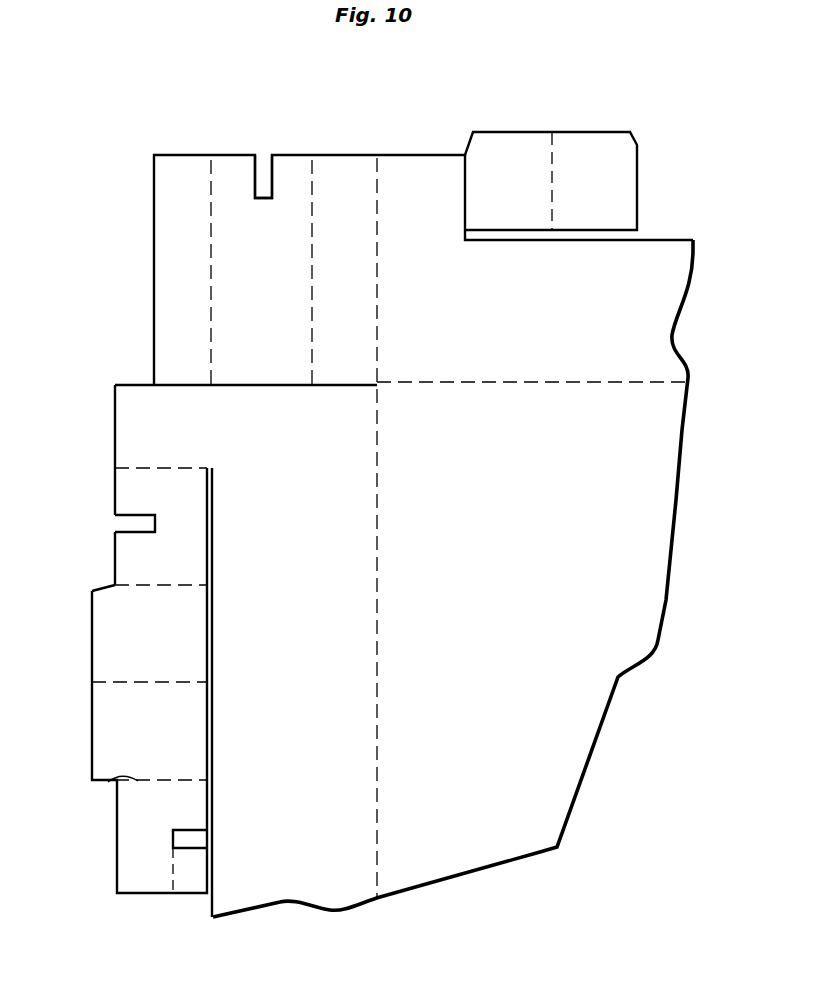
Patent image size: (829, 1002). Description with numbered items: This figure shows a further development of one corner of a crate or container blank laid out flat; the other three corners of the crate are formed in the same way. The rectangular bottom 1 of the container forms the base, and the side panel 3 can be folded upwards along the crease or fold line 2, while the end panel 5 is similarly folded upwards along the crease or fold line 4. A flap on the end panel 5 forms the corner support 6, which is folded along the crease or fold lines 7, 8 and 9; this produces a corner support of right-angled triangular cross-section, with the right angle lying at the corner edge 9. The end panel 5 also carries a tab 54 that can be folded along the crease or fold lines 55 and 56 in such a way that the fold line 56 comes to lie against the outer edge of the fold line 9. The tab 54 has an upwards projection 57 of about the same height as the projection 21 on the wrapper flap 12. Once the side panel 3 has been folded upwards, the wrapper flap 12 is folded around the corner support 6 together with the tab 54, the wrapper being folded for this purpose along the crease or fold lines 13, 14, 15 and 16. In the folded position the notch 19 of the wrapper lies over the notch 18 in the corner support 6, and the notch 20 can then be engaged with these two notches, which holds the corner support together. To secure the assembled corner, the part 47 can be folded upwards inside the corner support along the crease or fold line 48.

The bottom 1 is at (567, 772).
The crease or fold line 2 is at (378, 878).
The side panel 3 is at (271, 872).
The crease or fold line 4 is at (637, 382).
The end panel 5 is at (605, 277).
The corner support 6 is at (296, 188).
The crease or fold line 7 is at (211, 180).
The crease or fold line 8 is at (313, 185).
The crease or fold line 9 is at (378, 185).
The wrapper flap 12 is at (110, 727).
The crease or fold line 13 is at (140, 468).
The crease or fold line 14 is at (140, 585).
The crease or fold line 15 is at (118, 682).
The crease or fold line 16 is at (106, 784).
The notch 18 is at (265, 165).
The notch 19 is at (125, 525).
The notch 20 is at (175, 843).
The projection 21 is at (92, 600).
The part 47 is at (188, 880).
The crease or fold line 48 is at (172, 867).
The tab 54 is at (598, 130).
The crease or fold line 55 is at (468, 178).
The crease or fold line 56 is at (552, 160).
The upwards projection 57 is at (473, 131).